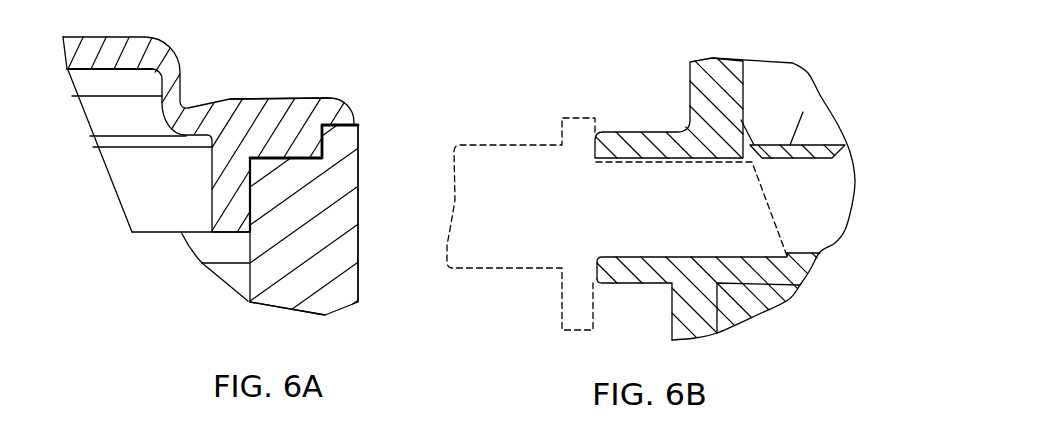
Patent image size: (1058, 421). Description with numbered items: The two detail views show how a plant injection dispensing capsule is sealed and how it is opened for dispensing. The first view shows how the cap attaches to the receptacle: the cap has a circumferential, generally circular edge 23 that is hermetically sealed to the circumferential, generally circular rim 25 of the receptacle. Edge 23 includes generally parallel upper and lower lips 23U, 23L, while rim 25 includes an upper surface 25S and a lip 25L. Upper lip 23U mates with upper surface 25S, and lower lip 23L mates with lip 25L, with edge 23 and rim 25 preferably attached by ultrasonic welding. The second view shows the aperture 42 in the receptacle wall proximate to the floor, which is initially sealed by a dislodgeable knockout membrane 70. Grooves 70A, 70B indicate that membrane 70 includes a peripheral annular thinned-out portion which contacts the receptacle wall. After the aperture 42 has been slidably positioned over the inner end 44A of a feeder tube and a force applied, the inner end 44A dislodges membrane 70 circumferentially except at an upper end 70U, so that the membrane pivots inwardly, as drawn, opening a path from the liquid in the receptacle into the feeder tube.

In FIG. 6A, the edge 23 is at (249, 132).
In FIG. 6A, the upper lip 23U is at (283, 61).
In FIG. 6A, the lower lip 23L is at (256, 103).
In FIG. 6A, the rim 25 is at (345, 195).
In FIG. 6A, the upper surface 25S is at (389, 202).
In FIG. 6A, the lip 25L is at (334, 256).
In FIG. 6B, the knockout membrane 70 is at (837, 123).
In FIG. 6B, the upper end 70U is at (735, 108).
In FIG. 6B, the groove 70A is at (794, 164).
In FIG. 6B, the groove 70B is at (842, 171).
In FIG. 6B, the aperture 42 is at (686, 224).
In FIG. 6B, the inner end 44A is at (735, 290).